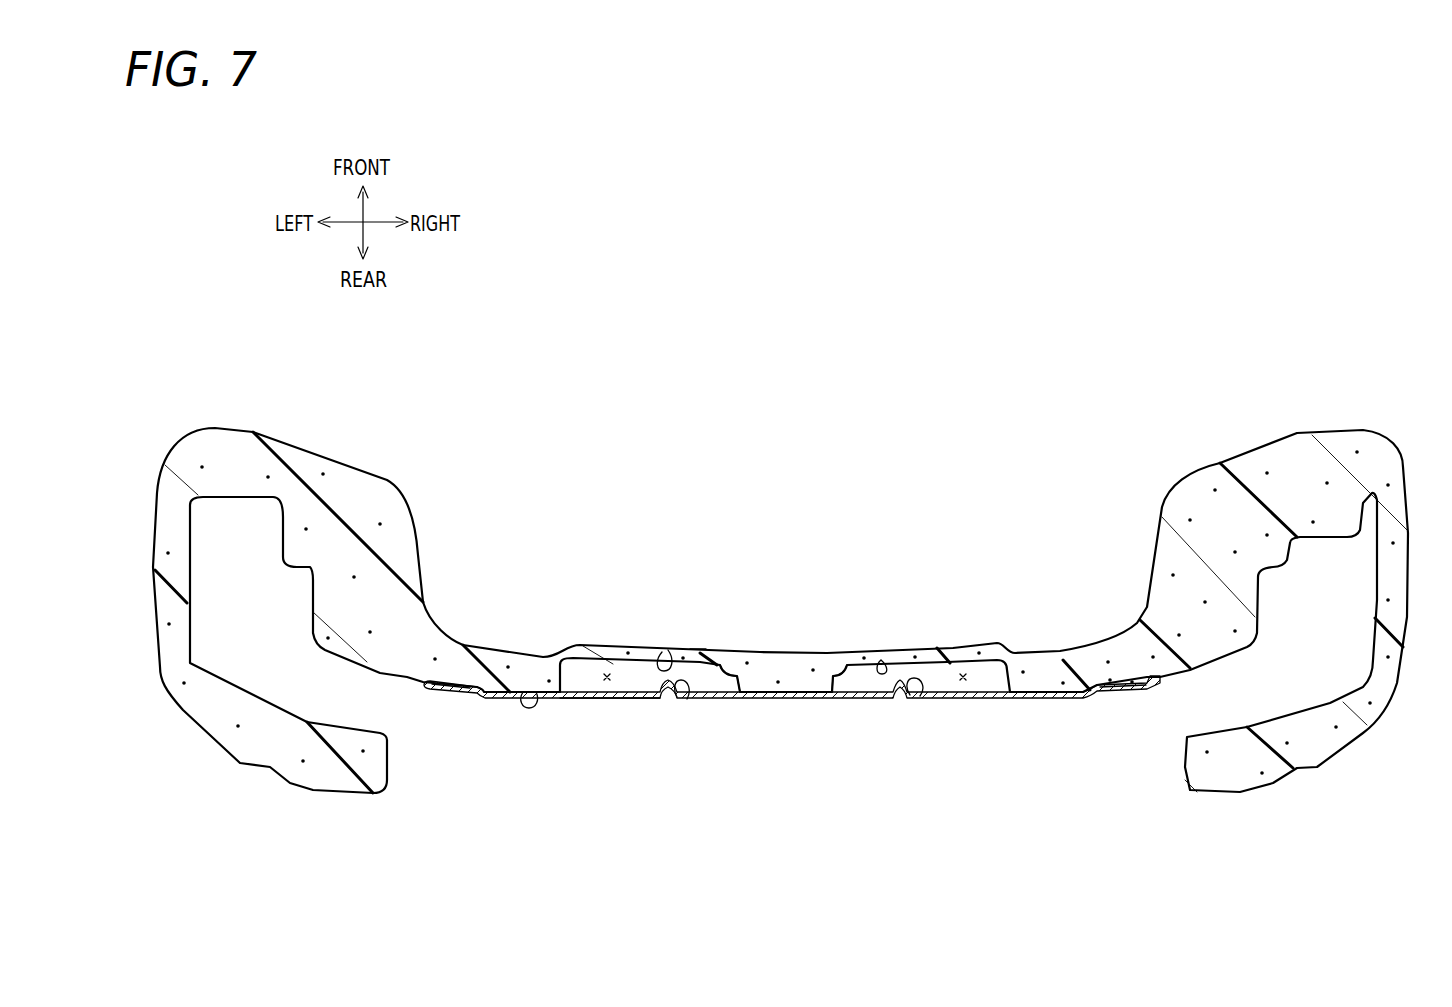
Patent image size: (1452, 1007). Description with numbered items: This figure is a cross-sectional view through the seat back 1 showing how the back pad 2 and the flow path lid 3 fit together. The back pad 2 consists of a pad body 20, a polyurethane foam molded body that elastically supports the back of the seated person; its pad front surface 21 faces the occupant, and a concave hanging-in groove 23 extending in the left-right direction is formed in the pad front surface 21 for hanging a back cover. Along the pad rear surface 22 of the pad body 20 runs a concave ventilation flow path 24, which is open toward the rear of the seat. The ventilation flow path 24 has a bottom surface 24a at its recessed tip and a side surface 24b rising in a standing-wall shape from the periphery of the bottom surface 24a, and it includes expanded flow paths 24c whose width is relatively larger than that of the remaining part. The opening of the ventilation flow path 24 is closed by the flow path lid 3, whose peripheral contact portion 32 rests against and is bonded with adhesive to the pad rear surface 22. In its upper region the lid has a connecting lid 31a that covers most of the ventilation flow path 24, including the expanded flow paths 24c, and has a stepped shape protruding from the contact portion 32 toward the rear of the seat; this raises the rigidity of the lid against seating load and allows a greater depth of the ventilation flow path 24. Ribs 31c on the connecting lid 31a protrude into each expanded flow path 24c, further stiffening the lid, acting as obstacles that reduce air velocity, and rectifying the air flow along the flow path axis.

The vehicle bumper structure 1 is at (1191, 297).
The back pad 2 is at (1270, 439).
The flow path lid 3 is at (857, 708).
The pad body 20 is at (1345, 440).
The pad front surface 21 is at (310, 447).
The pad rear surface 22 is at (536, 692).
The hanging-in groove 23 is at (698, 647).
The ventilation flow path 24 is at (645, 661).
The bottom surface 24a is at (668, 650).
The side surface 24b is at (847, 665).
The expanded flow path 24c is at (604, 672).
The connecting lid 31a is at (613, 699).
The rib 31c is at (687, 699).
The contact portion 32 is at (450, 691).